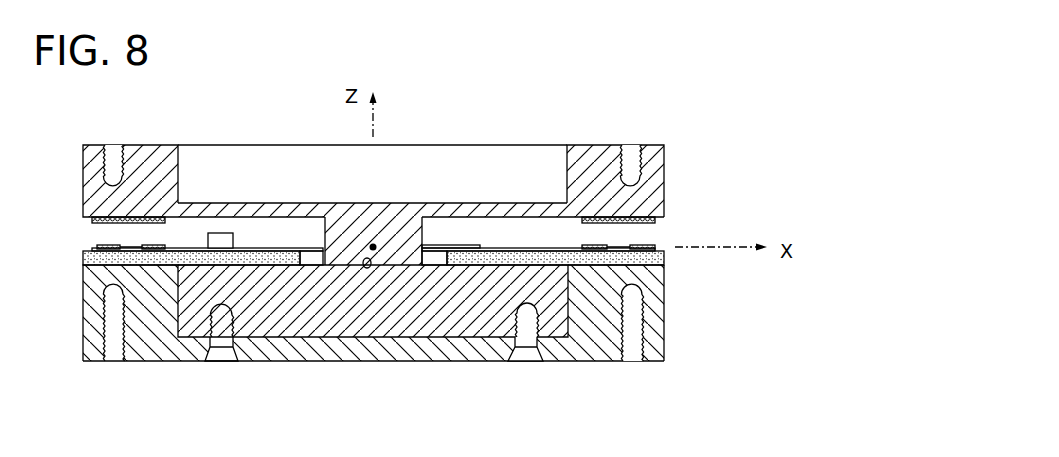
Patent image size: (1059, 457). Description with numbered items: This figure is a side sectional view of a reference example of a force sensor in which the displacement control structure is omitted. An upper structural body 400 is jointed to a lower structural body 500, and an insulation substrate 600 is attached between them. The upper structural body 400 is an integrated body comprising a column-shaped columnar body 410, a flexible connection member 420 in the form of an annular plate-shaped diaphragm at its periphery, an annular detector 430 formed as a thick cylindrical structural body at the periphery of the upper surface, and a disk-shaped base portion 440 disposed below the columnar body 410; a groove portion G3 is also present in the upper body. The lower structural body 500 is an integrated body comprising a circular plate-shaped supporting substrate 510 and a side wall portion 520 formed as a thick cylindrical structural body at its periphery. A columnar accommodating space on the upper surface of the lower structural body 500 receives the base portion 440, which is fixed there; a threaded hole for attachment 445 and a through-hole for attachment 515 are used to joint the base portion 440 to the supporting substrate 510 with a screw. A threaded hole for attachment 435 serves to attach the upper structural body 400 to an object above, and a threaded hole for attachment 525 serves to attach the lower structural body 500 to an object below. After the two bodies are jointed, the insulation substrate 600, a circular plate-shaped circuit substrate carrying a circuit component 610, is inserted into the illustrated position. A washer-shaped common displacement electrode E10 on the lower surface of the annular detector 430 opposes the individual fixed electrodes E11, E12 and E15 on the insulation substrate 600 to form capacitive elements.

The upper structural body 400 is at (94, 122).
The columnar body 410 is at (398, 233).
The flexible connection member 420 is at (476, 205).
The annular detector 430 is at (601, 168).
The threaded hole for attachment 435 is at (633, 150).
The groove portion G3 is at (293, 157).
The common displacement electrode E10 is at (110, 216).
The individual fixed electrode E11 is at (645, 246).
The individual fixed electrode E12 is at (97, 246).
The individual fixed electrode E15 is at (148, 246).
The insulation substrate 600 is at (258, 260).
The circuit component 610 is at (223, 233).
The lower structural body 500 is at (93, 376).
The supporting substrate 510 is at (287, 350).
The side wall portion 520 is at (652, 312).
The base portion 440 is at (358, 320).
The threaded hole for attachment 445 is at (520, 318).
The through-hole for attachment 515 is at (527, 353).
The threaded hole for attachment 525 is at (633, 350).